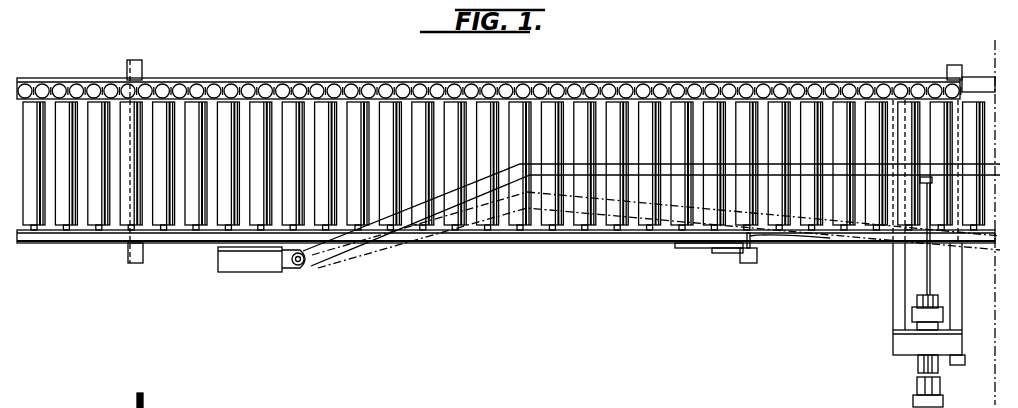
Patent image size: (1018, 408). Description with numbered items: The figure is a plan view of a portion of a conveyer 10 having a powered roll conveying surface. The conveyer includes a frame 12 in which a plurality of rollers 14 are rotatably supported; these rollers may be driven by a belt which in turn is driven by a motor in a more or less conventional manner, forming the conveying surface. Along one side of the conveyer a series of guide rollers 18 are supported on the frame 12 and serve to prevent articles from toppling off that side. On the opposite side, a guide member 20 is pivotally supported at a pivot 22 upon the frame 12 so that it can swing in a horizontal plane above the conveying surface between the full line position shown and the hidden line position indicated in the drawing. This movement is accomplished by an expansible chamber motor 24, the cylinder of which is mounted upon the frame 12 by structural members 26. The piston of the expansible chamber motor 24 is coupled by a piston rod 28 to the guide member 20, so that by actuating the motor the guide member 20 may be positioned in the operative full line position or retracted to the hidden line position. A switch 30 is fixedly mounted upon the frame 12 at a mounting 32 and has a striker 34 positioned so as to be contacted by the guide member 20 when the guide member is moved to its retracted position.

The conveyer 10 is at (122, 265).
The frame 12 is at (193, 242).
The rollers 14 is at (385, 102).
The guide rollers 18 is at (609, 88).
The guide member 20 is at (380, 232).
The pivot 22 is at (297, 268).
The expansible chamber motor 24 is at (918, 368).
The structural members 26 is at (893, 292).
The piston rod 28 is at (930, 280).
The switch 30 is at (763, 263).
The switch mounting 32 is at (705, 248).
The striker 34 is at (752, 237).